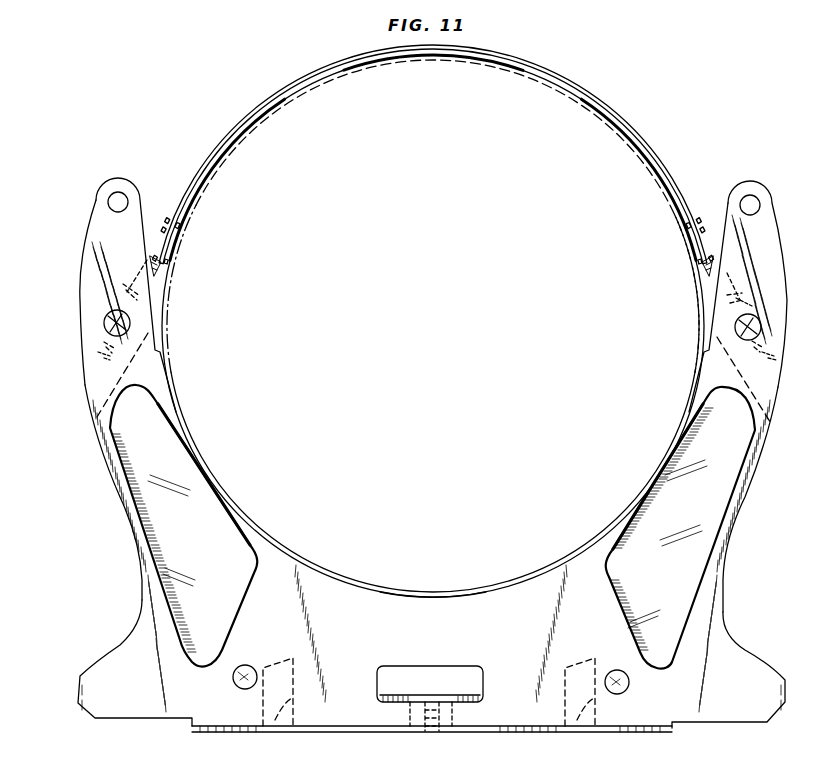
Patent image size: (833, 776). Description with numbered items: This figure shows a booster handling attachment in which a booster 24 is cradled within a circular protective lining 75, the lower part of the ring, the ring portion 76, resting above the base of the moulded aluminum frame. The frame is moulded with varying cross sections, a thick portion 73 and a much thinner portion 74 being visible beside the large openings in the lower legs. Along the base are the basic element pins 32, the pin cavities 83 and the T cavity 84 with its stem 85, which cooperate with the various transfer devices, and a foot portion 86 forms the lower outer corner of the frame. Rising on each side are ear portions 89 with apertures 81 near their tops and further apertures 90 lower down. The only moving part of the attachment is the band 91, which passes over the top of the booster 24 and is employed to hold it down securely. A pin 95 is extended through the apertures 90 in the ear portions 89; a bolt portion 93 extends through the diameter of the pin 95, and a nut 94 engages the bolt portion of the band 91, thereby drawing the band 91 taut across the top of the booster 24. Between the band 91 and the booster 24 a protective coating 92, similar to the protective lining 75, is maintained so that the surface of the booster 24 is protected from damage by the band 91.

The booster 24 is at (700, 303).
The element pins 32 is at (240, 666).
The portion 73 is at (138, 535).
The portion 74 is at (175, 515).
The protective lining 75 is at (196, 452).
The ring bottom portion 76 is at (347, 597).
The apertures 81 is at (124, 195).
The pin cavities 83 is at (282, 728).
The T cavity 84 is at (468, 676).
The stem 85 is at (420, 694).
The foot 86 is at (125, 648).
The ear portions 89 is at (90, 246).
The apertures 90 is at (128, 322).
The band 91 is at (567, 78).
The protective coating 92 is at (284, 101).
The bolt portion 93 is at (100, 350).
The nut 94 is at (104, 340).
The pin 95 is at (752, 322).